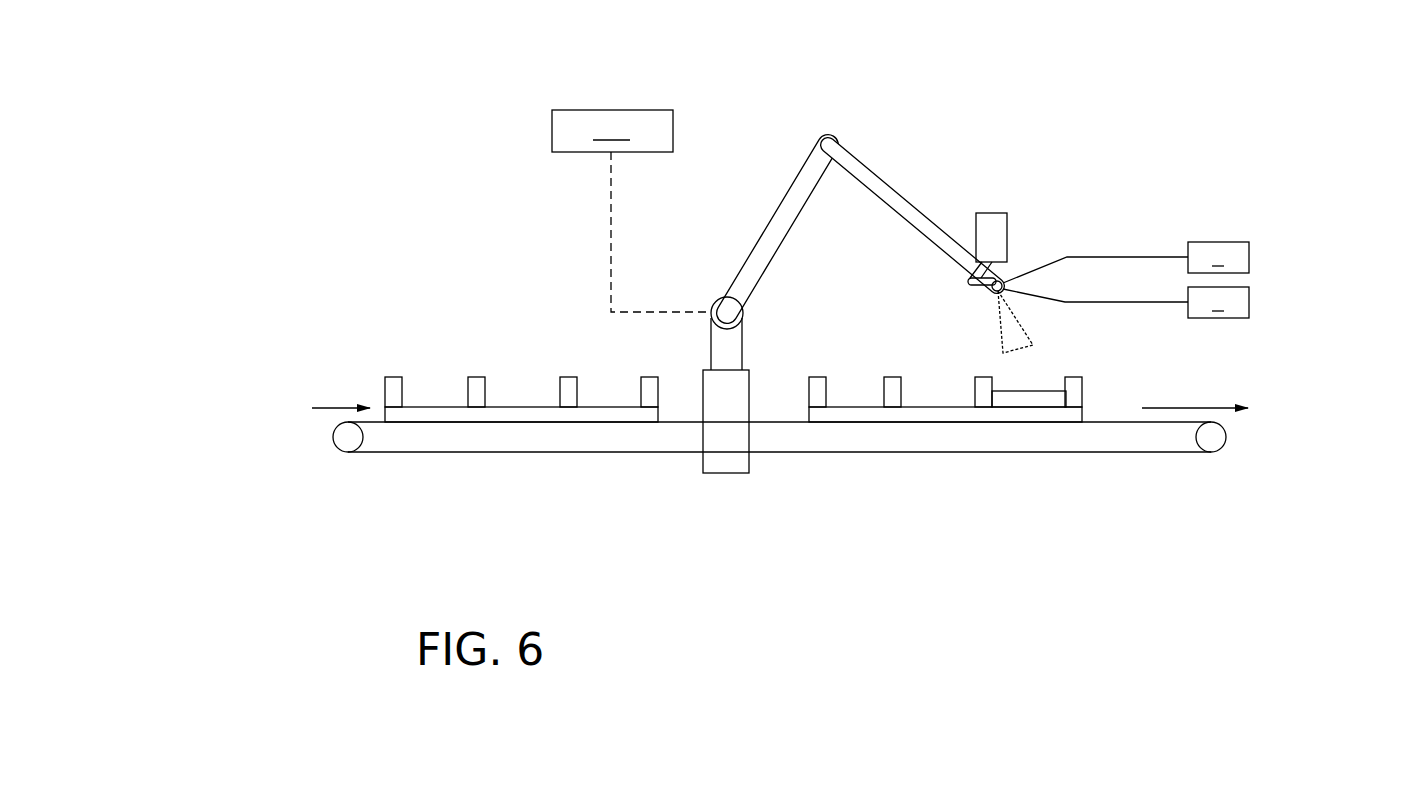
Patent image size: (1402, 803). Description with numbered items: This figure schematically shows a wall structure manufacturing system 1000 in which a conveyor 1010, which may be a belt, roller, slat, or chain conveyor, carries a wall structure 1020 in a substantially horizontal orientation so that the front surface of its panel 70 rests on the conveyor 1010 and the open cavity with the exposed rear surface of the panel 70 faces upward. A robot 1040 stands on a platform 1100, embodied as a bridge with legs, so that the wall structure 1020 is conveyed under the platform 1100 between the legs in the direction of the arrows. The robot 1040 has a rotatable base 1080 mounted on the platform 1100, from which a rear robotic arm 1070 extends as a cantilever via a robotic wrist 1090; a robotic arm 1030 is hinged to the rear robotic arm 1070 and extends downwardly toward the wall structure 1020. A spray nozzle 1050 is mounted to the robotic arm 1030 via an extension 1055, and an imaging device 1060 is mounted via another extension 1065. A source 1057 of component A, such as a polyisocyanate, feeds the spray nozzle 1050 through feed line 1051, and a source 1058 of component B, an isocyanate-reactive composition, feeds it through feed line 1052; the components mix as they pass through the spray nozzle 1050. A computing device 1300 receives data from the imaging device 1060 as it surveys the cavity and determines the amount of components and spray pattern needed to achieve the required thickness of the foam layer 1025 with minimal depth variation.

The system 1000 is at (385, 212).
The conveyor 1010 is at (1053, 454).
The panel 70 is at (385, 413).
The wall structure 1020 is at (388, 367).
The foam layer 1025 is at (1043, 391).
The robotic arm 1030 is at (890, 197).
The robot 1040 is at (836, 180).
The spray nozzle 1050 is at (1003, 283).
The feed line 1051 is at (1080, 255).
The feed line 1052 is at (1083, 300).
The extension 1055 is at (993, 288).
The source of component A 1057 is at (1218, 242).
The source of component B 1058 is at (1249, 302).
The imaging device 1060 is at (990, 213).
The extension 1065 is at (970, 275).
The rear robotic arm 1070 is at (770, 220).
The base 1080 is at (711, 338).
The robotic wrist 1090 is at (745, 330).
The platform 1100 is at (725, 473).
The computing device 1300 is at (630, 211).